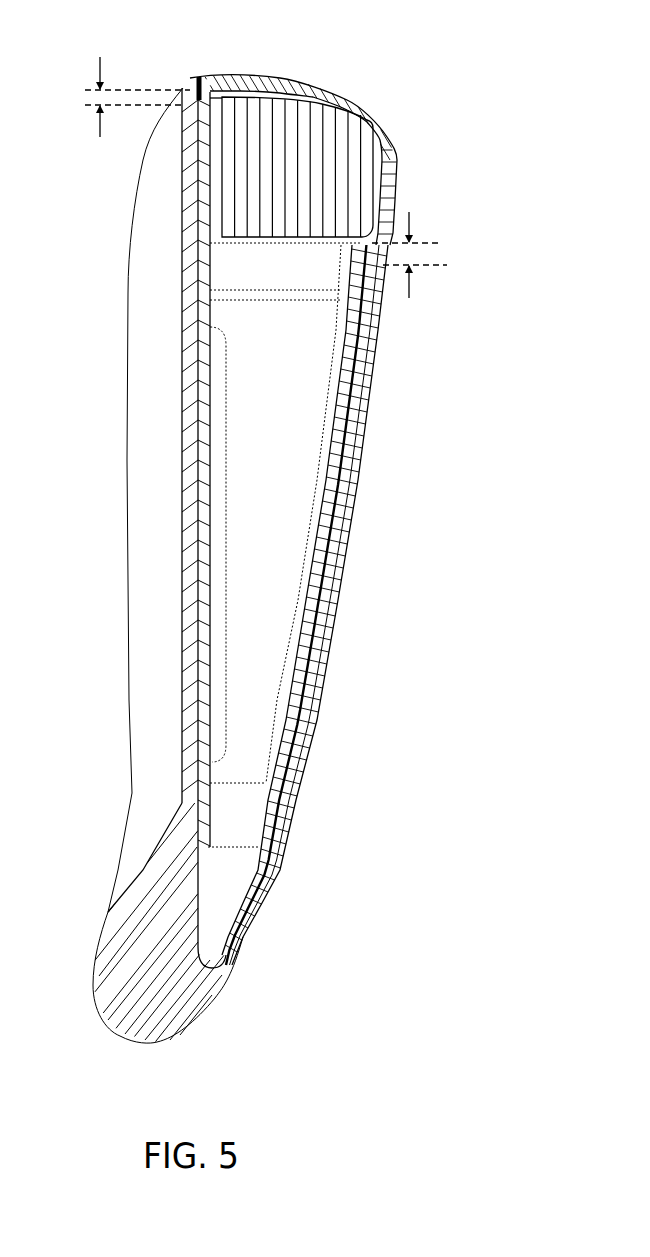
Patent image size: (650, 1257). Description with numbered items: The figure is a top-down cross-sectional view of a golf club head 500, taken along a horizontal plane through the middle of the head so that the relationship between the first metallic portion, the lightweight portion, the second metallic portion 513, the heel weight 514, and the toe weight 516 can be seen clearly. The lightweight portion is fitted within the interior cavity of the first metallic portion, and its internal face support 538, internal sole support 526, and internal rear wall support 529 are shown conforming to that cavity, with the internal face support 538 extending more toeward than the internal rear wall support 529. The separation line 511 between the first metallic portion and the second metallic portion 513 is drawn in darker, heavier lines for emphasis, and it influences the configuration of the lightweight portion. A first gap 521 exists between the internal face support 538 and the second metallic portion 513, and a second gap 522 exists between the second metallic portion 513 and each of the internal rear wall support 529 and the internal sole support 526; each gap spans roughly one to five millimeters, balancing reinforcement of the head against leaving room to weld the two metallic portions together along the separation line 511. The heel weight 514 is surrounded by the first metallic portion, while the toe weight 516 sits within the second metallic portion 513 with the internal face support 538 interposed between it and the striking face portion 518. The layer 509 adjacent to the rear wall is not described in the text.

The golf club head 500 is at (535, 40).
The separation line 511 is at (200, 78).
The second metallic portion 513 is at (392, 195).
The toe weight 516 is at (318, 158).
The striking face portion 518 is at (188, 653).
The internal face support 538 is at (202, 543).
The internal sole support 526 is at (292, 468).
The outer layer of side band 509 is at (327, 612).
The internal rear wall support 529 is at (293, 722).
The heel weight 514 is at (240, 883).
The first gap 521 is at (87, 93).
The second gap 522 is at (441, 254).